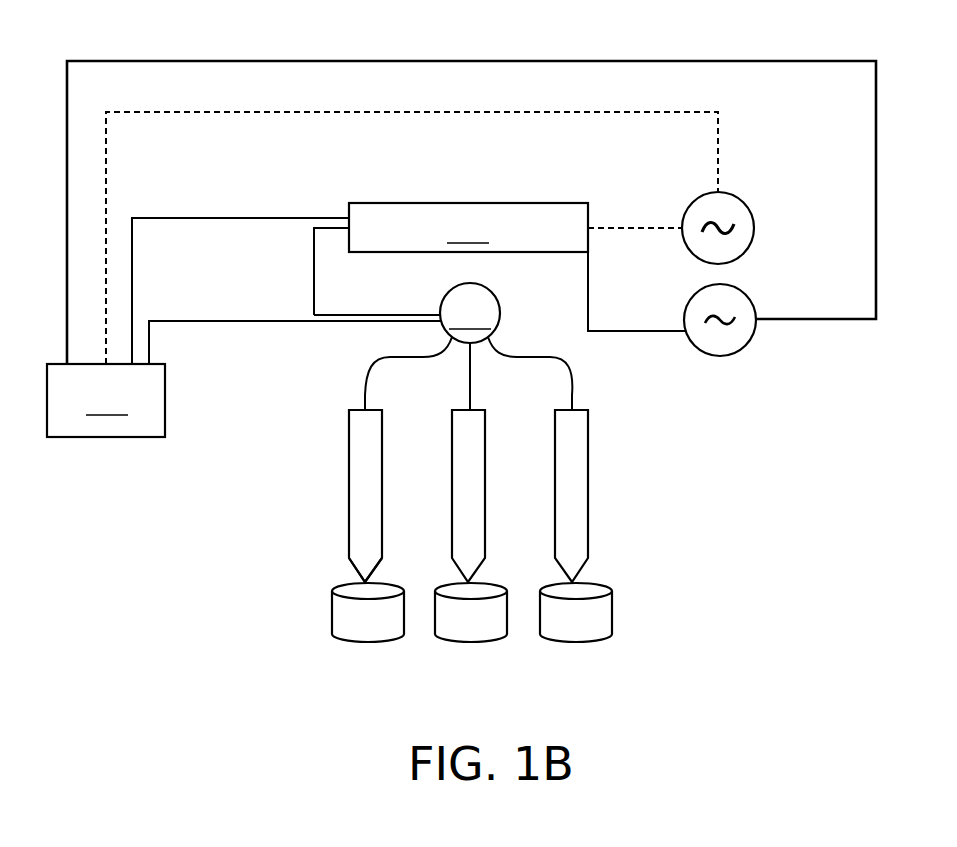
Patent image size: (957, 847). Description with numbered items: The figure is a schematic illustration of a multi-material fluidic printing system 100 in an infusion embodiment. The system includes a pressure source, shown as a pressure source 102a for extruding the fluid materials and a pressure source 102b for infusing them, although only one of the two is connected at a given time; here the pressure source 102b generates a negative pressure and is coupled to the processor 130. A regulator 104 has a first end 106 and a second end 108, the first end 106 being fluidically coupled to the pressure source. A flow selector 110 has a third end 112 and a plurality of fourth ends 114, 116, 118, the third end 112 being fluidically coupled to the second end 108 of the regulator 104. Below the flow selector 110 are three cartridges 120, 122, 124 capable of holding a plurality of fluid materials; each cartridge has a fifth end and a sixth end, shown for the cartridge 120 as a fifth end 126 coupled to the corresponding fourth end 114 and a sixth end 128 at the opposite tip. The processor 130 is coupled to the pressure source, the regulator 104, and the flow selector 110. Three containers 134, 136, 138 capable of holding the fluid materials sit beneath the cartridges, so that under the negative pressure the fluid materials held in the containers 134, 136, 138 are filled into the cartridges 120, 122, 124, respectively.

The multi-material fluidic printing system 100 is at (735, 48).
The pressure source 102a is at (743, 203).
The pressure source 102b is at (750, 302).
The regulator 104 is at (468, 227).
The first end 106 is at (588, 207).
The second end 108 is at (348, 212).
The flow selector 110 is at (470, 313).
The third end 112 is at (441, 312).
The fourth end 114 is at (368, 368).
The fourth end 116 is at (470, 402).
The fourth end 118 is at (572, 377).
The cartridge 120 is at (348, 503).
The cartridge 122 is at (485, 488).
The cartridge 124 is at (588, 501).
The fifth end 126 is at (349, 408).
The sixth end 128 is at (365, 582).
The processor 130 is at (382, 274).
The container 134 is at (332, 617).
The container 136 is at (455, 641).
The container 138 is at (613, 618).